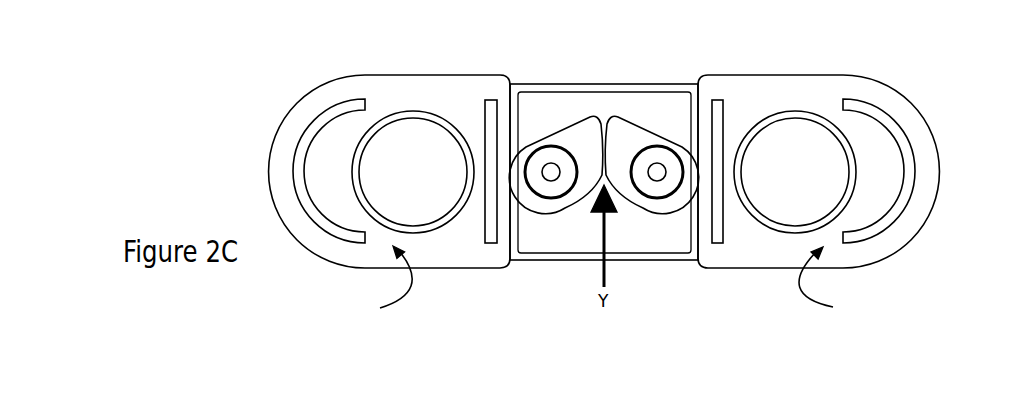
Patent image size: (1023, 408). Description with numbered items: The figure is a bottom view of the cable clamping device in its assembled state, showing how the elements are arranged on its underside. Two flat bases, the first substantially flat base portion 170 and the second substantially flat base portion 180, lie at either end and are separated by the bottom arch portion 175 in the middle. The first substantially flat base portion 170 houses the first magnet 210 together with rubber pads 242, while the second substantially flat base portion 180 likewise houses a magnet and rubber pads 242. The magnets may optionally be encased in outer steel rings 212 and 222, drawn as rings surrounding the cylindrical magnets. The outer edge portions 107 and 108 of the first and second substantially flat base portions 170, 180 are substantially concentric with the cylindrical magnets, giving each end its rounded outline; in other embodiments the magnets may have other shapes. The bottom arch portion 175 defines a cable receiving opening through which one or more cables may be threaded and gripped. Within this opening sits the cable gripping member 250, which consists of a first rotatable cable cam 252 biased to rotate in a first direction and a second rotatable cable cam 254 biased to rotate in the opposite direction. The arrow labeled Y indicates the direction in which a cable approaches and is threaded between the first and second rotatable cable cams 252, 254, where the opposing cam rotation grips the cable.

The outer edge portion 107 is at (270, 152).
The outer edge portion 108 is at (938, 185).
The bottom arch portion 175 is at (667, 90).
The rubber pads 242 is at (332, 112).
The first magnet 210 is at (435, 185).
The outer steel ring 212 is at (440, 223).
The outer steel ring 222 is at (785, 225).
The cable gripping member 250 is at (684, 119).
The first rotatable cable cam 252 is at (560, 137).
The second rotatable cable cam 254 is at (635, 139).
The first substantially flat base portion 170 is at (379, 282).
The second substantially flat base portion 180 is at (834, 283).